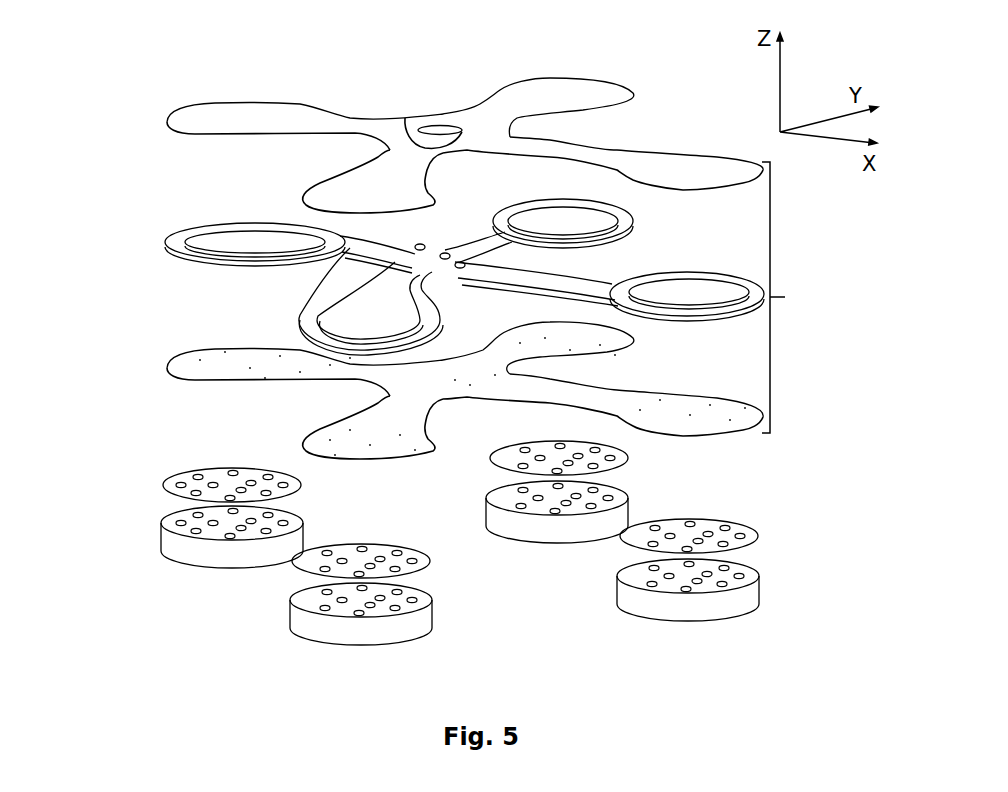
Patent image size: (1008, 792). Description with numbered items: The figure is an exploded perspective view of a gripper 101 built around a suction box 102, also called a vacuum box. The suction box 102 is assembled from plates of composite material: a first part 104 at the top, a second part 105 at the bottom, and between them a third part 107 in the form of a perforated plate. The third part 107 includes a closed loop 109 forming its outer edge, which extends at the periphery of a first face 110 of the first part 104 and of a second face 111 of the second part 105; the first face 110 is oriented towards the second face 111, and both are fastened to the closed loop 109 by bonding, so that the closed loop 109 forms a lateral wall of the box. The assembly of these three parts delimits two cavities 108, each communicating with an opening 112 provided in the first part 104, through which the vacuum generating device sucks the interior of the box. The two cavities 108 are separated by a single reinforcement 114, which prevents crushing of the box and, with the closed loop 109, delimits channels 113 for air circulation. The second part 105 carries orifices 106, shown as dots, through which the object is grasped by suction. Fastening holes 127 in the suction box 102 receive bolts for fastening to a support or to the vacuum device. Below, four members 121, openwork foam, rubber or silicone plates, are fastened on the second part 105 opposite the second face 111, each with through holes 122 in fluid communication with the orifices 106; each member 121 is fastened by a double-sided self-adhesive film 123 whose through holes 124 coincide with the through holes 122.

The gripper 101 is at (645, 73).
The suction box 102 is at (566, 310).
The first part 104 is at (183, 115).
The second part 105 is at (173, 365).
The orifices 106 is at (218, 343).
The third part 107 is at (165, 243).
The cavity 108 is at (415, 281).
The closed loop 109 is at (193, 223).
The first face 110 is at (728, 199).
The second face 111 is at (714, 392).
The opening 112 is at (447, 126).
The channels 113 is at (615, 285).
The reinforcement 114 is at (470, 242).
The member 121 is at (202, 557).
The through holes 122 is at (180, 523).
The double-sided self-adhesive film 123 is at (208, 490).
The through holes 124 is at (178, 486).
The fastening holes 127 is at (405, 118).